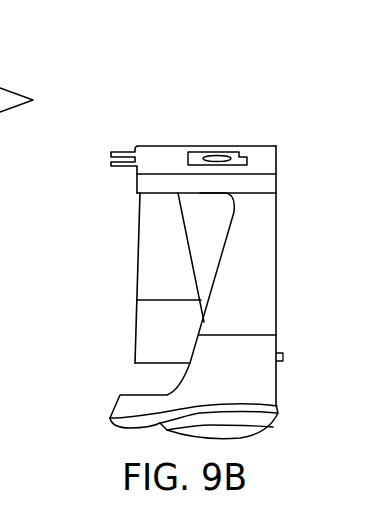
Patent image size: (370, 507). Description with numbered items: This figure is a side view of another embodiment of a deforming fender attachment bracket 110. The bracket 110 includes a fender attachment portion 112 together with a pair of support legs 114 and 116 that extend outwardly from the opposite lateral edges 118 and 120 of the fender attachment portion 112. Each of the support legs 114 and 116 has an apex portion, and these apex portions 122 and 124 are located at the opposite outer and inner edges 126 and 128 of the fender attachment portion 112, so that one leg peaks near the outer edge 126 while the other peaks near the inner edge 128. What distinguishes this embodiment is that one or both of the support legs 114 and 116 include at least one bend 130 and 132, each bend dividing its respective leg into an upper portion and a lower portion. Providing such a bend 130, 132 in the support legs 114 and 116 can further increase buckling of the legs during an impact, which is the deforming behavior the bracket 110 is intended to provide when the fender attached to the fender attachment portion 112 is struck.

The deforming fender attachment bracket 110 is at (284, 94).
The fender attachment portion 112 is at (166, 117).
The support leg 114 is at (298, 302).
The support leg 116 is at (117, 247).
The lateral edge 118 is at (263, 174).
The lateral edge 120 is at (205, 146).
The apex portion 122 is at (290, 229).
The apex portion 124 is at (130, 197).
The outer edge 126 is at (133, 156).
The inner edge 128 is at (279, 157).
The bend 130 is at (237, 336).
The bend 132 is at (180, 301).